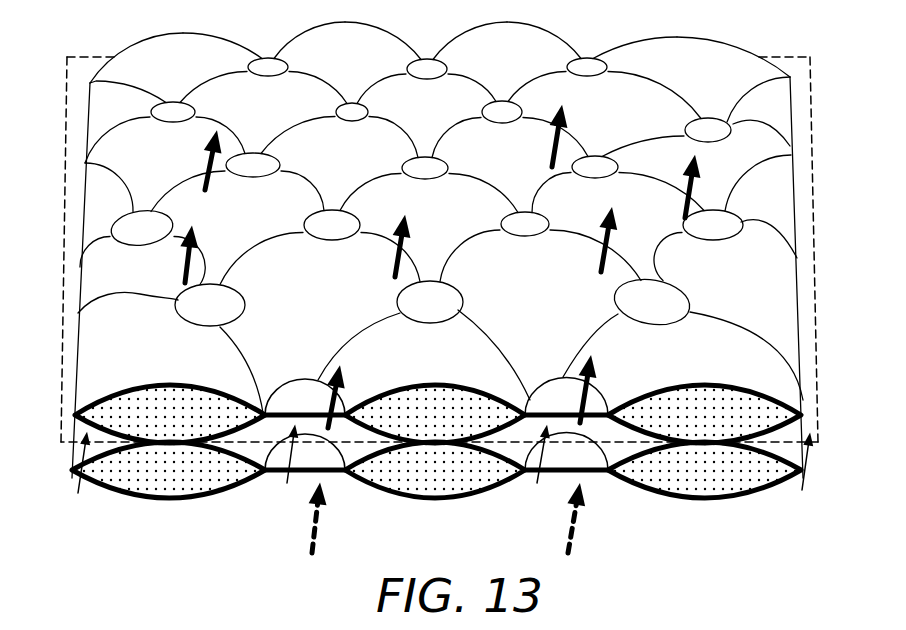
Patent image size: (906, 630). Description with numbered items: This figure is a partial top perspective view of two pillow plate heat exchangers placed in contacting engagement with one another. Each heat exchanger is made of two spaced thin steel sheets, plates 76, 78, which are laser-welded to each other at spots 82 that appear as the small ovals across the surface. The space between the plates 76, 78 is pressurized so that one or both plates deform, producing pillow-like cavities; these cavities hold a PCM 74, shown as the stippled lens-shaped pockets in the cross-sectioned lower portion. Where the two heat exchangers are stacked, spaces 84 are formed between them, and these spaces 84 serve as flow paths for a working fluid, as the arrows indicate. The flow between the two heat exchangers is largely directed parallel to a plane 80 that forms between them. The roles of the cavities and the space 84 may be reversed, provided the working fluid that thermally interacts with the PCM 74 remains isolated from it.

The PCM 74 is at (132, 403).
The plate 76 is at (705, 363).
The plate 78 is at (762, 441).
The plane 80 is at (813, 124).
The spots 82 is at (657, 307).
The space 84 is at (263, 457).